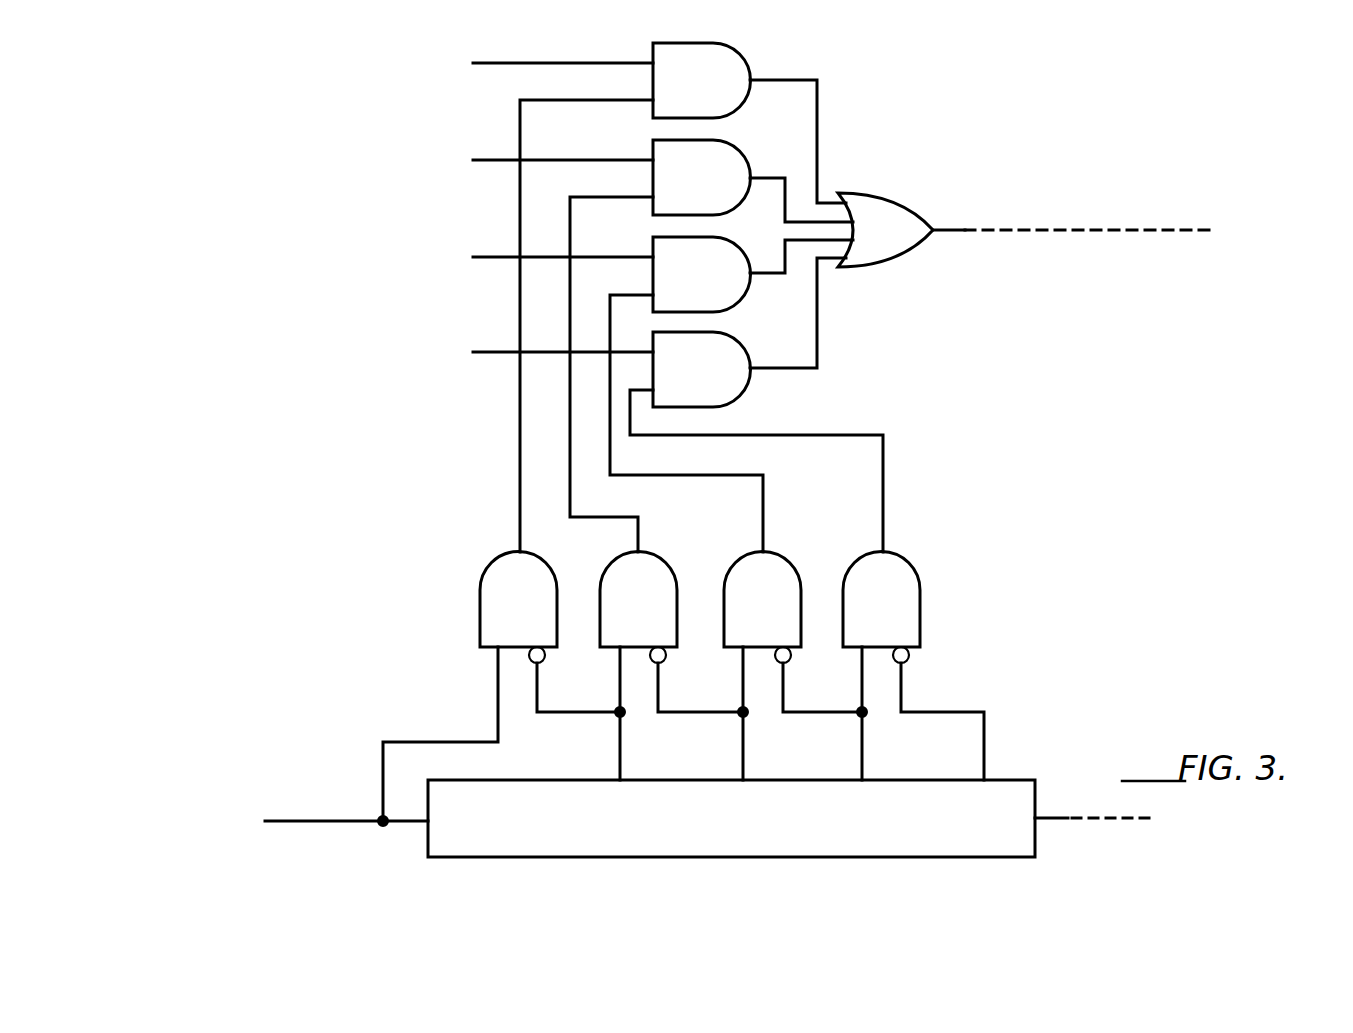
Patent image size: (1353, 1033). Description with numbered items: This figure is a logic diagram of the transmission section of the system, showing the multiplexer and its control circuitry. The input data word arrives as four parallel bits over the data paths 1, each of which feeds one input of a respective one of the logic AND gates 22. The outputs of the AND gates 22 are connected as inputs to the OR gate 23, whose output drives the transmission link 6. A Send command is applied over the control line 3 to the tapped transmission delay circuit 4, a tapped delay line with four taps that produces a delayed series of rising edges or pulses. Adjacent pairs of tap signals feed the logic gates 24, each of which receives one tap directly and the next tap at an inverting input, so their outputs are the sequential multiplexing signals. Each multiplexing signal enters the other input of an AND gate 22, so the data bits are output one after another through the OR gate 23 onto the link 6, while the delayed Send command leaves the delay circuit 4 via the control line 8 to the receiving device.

The data paths 1 is at (526, 62).
The logic AND gates 22 is at (745, 63).
The OR gate 23 is at (888, 265).
The logic gates 24 is at (496, 558).
The control line 3 is at (315, 823).
The tapped transmission delay circuit 4 is at (1022, 694).
The transmission link 6 is at (1108, 232).
The control line 8 is at (1094, 823).